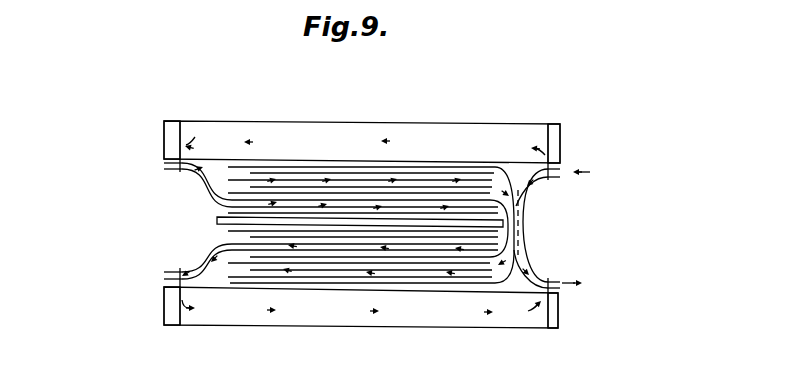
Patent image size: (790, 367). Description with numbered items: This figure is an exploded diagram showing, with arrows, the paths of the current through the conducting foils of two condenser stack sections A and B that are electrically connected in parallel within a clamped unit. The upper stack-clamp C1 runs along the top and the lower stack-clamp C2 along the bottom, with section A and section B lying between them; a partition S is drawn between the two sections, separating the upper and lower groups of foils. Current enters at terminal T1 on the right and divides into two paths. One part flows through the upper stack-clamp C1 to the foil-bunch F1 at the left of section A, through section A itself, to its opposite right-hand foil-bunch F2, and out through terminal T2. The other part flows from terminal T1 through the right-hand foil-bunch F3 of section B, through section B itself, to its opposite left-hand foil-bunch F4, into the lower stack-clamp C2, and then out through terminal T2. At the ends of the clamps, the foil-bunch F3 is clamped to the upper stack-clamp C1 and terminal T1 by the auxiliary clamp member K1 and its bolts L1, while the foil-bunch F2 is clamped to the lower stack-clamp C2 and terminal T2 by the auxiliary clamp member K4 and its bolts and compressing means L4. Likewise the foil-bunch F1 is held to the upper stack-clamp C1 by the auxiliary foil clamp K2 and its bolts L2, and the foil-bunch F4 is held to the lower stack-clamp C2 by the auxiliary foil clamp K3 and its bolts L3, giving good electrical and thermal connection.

The upper stack-clamp C1 is at (347, 121).
The lower stack-clamp C2 is at (383, 328).
The condenser stack section A is at (347, 183).
The condenser stack section B is at (341, 255).
The partition plate S is at (217, 221).
The foil-bunch F1 is at (196, 169).
The foil-bunch F2 is at (504, 185).
The foil-bunch F3 is at (534, 184).
The foil-bunch F4 is at (178, 271).
The terminal T1 is at (586, 175).
The terminal T2 is at (583, 286).
The bolts L1 is at (593, 152).
The auxiliary clamp member K1 is at (561, 140).
The bolts L2 is at (117, 133).
The auxiliary foil clamp K2 is at (163, 126).
The bolts L3 is at (164, 297).
The auxiliary foil clamp K3 is at (126, 297).
The bolts and compressing means L4 is at (559, 318).
The auxiliary clamp member K4 is at (589, 307).